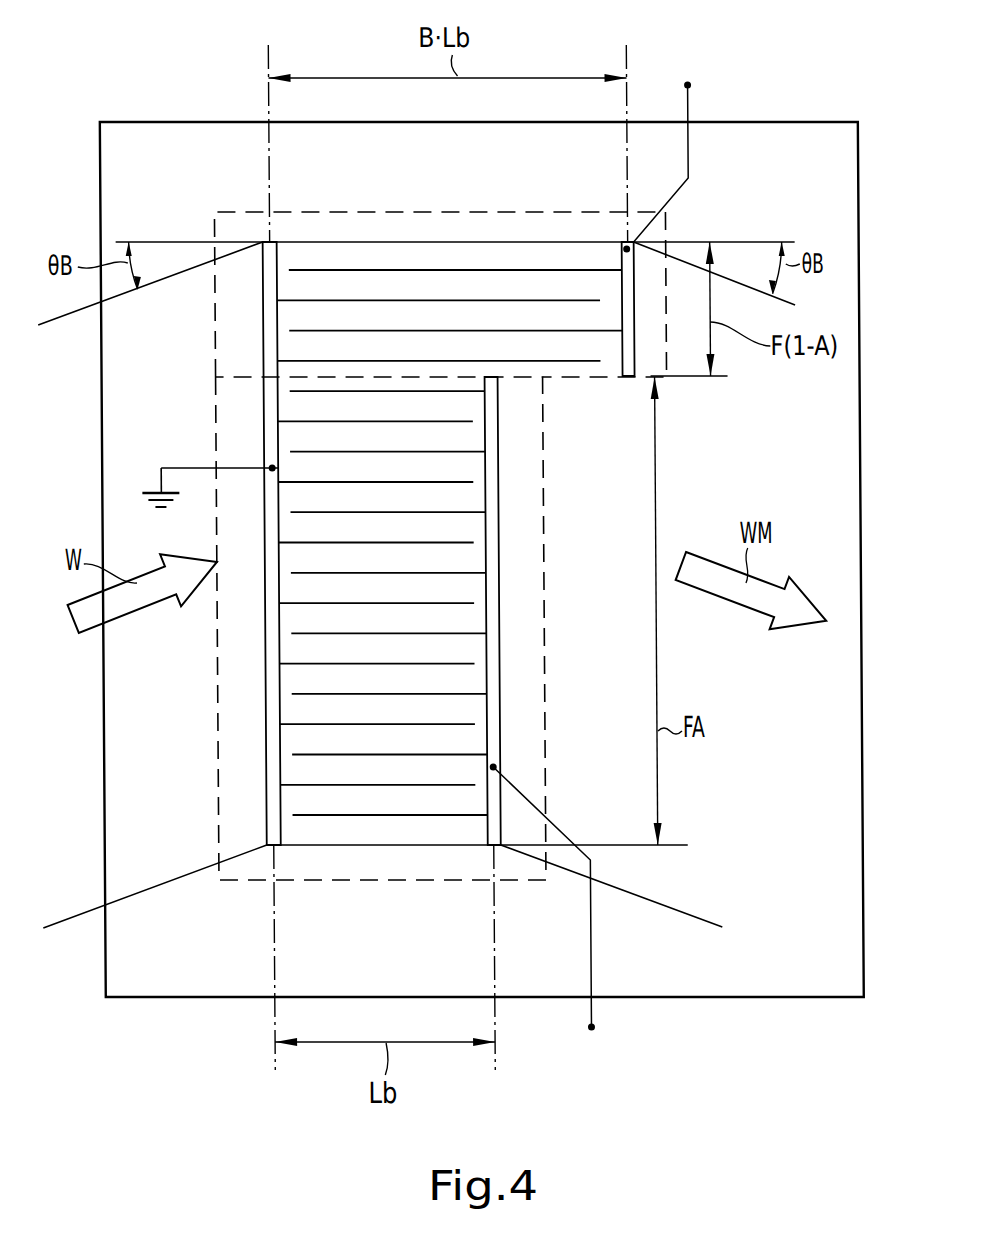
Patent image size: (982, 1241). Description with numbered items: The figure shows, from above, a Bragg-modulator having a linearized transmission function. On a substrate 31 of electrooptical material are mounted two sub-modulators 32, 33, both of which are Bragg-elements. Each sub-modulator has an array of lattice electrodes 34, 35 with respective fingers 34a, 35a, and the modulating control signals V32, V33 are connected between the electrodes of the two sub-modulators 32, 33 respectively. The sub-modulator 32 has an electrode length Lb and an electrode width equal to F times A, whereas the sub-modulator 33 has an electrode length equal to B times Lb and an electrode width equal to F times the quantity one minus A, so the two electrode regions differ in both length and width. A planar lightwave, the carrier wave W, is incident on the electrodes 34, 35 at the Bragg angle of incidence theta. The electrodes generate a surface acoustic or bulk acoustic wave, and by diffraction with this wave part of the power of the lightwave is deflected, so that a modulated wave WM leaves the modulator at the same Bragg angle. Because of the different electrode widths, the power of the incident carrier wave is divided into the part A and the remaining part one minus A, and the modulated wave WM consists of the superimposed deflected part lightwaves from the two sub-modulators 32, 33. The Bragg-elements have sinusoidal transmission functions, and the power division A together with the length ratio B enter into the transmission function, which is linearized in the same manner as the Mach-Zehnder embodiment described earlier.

The substrate 31 is at (749, 983).
The sub-modulator 32 is at (210, 790).
The sub-modulator 33 is at (235, 207).
The lattice electrode 34 is at (261, 676).
The finger 34a is at (297, 724).
The lattice electrode 35 is at (621, 296).
The finger 35a is at (408, 242).
The modulating control signal V32 is at (549, 917).
The modulating control signal V33 is at (665, 150).